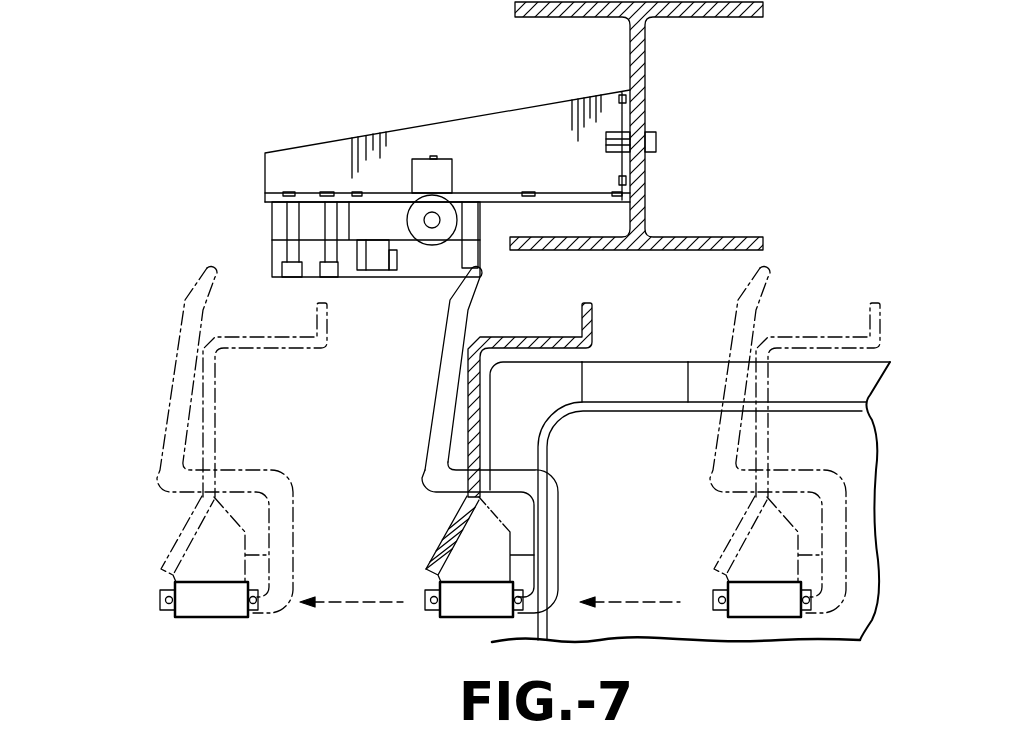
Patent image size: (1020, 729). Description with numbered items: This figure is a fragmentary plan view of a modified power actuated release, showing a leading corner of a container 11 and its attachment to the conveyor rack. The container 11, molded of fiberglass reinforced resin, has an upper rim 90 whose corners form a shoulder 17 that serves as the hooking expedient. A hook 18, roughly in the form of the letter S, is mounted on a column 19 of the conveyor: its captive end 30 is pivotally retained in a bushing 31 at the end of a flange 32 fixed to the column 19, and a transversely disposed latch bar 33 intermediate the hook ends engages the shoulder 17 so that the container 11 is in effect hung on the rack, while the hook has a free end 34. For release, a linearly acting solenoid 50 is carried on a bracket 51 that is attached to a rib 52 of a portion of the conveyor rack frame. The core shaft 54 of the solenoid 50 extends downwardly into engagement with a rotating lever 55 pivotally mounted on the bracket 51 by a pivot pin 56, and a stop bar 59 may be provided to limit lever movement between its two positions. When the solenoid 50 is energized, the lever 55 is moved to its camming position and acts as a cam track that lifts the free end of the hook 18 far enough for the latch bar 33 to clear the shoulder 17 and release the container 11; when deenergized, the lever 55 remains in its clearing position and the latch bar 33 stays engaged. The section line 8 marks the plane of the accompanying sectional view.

The section line 8- 8 is at (175, 668).
The container 11 is at (658, 617).
The shoulder 17 is at (582, 392).
The hook 18 is at (437, 440).
The column 19 is at (467, 501).
The captive end 30 is at (534, 614).
The bushing 31 is at (467, 612).
The flange 32 is at (468, 565).
The latch bar 33 is at (510, 483).
The free end 34 is at (482, 273).
The solenoid 50 is at (437, 200).
The bracket 51 is at (422, 136).
The rib 52 is at (645, 88).
The core shaft 54 is at (440, 220).
The rotating lever 55 is at (422, 270).
The pivot pin 56 is at (373, 270).
The stop bar 59 is at (478, 216).
The upper rim 90 is at (700, 381).